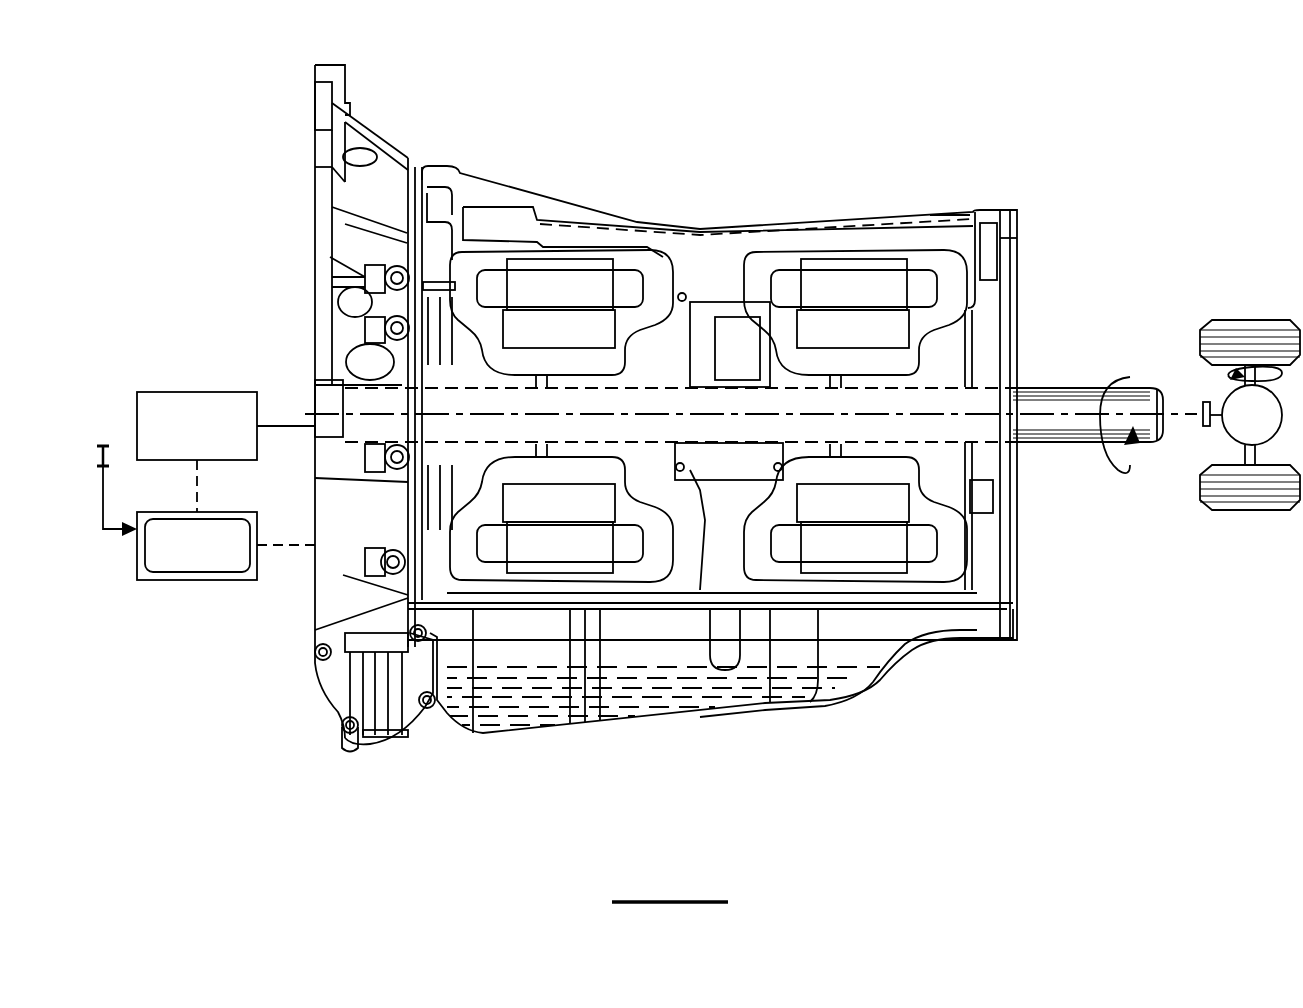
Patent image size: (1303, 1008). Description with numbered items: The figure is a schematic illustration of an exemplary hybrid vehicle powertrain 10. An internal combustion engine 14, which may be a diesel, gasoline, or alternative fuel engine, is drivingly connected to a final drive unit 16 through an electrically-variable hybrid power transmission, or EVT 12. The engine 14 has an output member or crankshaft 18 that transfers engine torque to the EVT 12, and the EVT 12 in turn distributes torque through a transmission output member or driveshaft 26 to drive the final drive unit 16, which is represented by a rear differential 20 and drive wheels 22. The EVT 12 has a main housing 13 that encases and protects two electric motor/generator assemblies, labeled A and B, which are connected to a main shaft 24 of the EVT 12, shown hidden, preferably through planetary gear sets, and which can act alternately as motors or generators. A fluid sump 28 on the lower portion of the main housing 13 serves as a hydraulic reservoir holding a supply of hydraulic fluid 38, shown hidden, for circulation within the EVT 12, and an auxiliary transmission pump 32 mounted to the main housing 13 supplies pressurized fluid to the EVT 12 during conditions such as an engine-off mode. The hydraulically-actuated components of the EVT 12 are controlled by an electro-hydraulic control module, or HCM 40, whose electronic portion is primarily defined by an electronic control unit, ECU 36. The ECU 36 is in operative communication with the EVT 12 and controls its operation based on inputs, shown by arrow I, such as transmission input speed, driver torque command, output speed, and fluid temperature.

The vehicle powertrain 10 is at (940, 106).
The electrically-variable hybrid power transmission 12 is at (624, 160).
The main housing 13 is at (865, 214).
The internal combustion engine 14 is at (198, 392).
The final drive unit 16 is at (1267, 282).
The crankshaft 18 is at (278, 424).
The rear differential 20 is at (1234, 428).
The drive wheels 22 is at (1200, 341).
The main shaft 24 is at (943, 384).
The driveshaft 26 is at (1052, 443).
The fluid sump 28 is at (633, 716).
The auxiliary transmission pump 32 is at (333, 680).
The electronic control unit 36 is at (222, 575).
The hydraulic fluid 38 is at (703, 687).
The transmission electro-hydraulic control module 40 is at (137, 568).